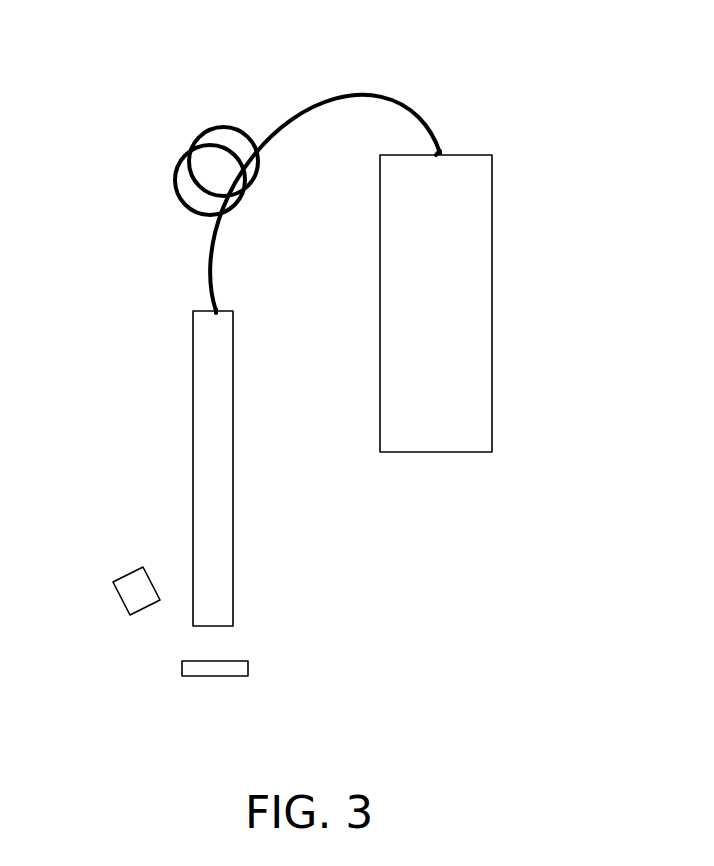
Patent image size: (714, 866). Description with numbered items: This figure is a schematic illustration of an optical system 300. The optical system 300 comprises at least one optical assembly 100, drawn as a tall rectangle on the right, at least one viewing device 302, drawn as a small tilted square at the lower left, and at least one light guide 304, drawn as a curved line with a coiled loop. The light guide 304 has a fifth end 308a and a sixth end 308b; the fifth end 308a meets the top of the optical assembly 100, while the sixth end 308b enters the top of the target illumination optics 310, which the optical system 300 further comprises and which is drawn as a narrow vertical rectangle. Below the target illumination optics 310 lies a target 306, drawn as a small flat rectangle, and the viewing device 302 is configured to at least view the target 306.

The optical system 300 is at (107, 38).
The light guide 304 is at (367, 112).
The fifth end 308a is at (463, 147).
The sixth end 308b is at (184, 302).
The optical assembly 100 is at (519, 240).
The target illumination optics 310 is at (193, 405).
The viewing device 302 is at (118, 595).
The target 306 is at (183, 677).